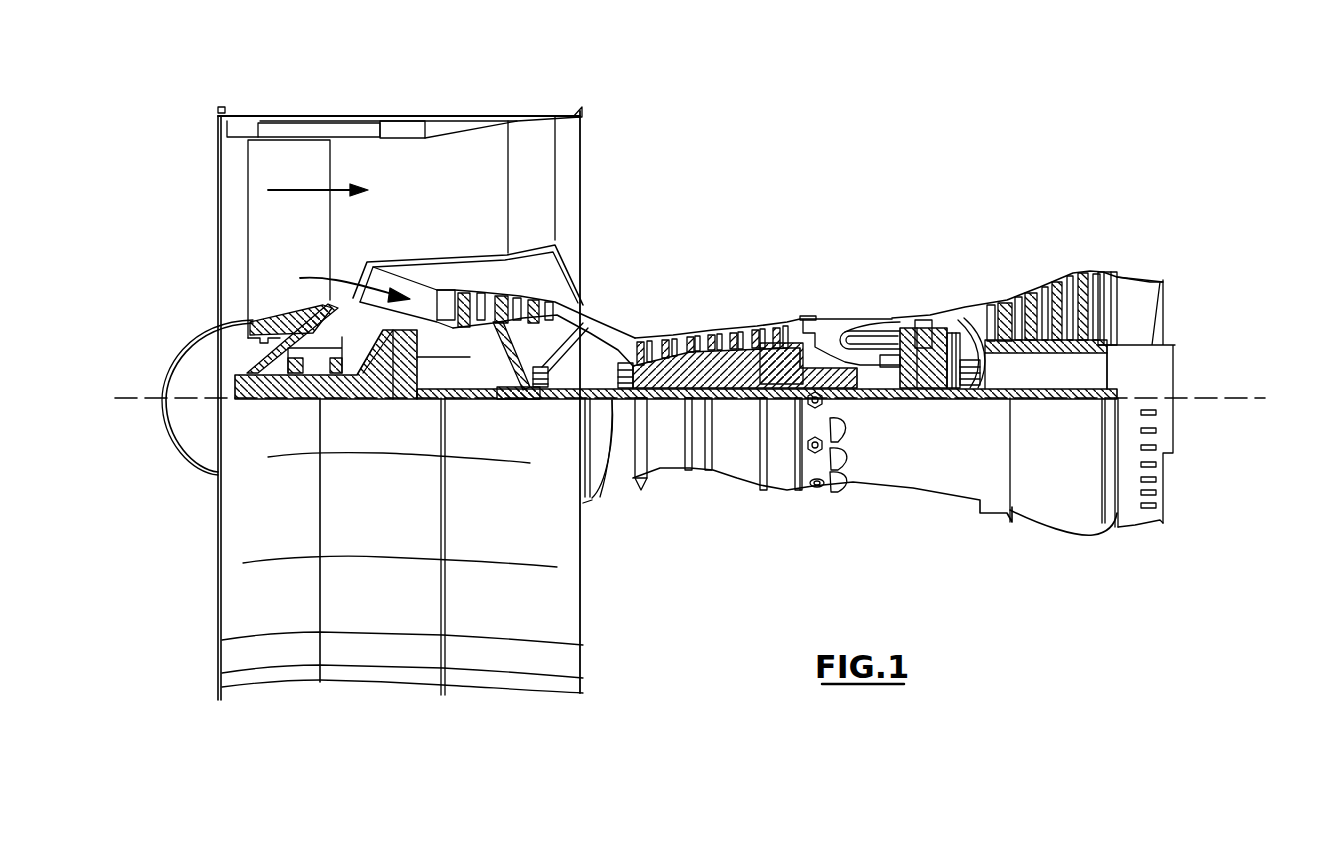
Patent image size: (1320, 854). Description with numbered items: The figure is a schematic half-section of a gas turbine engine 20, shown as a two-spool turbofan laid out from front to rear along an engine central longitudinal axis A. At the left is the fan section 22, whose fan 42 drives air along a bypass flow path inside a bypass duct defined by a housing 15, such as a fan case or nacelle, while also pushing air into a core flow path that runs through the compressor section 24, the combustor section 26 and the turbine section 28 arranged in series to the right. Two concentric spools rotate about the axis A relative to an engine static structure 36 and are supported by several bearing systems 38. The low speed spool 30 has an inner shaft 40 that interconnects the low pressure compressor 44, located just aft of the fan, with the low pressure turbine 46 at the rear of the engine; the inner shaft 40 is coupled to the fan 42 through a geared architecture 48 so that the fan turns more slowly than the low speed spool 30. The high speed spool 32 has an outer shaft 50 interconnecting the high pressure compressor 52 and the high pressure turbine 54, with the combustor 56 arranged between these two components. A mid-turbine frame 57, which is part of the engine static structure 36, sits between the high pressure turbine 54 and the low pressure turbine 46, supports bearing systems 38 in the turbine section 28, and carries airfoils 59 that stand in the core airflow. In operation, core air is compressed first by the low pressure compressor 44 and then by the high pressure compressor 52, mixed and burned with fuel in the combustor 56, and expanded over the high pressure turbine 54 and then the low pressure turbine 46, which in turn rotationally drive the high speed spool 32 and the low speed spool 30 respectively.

The housing 15 is at (400, 119).
The gas turbine engine 20 is at (701, 369).
The fan section 22 is at (372, 369).
The compressor section 24 is at (755, 320).
The combustor section 26 is at (893, 311).
The turbine section 28 is at (1033, 365).
The low speed spool 30 is at (740, 400).
The high speed spool 32 is at (785, 331).
The engine static structure 36 is at (782, 486).
The bearing systems 38 is at (539, 395).
The inner shaft 40 is at (610, 483).
The fan 42 is at (304, 245).
The low pressure compressor 44 is at (522, 300).
The low pressure turbine 46 is at (1050, 284).
The geared architecture 48 is at (405, 390).
The outer shaft 50 is at (868, 390).
The high pressure compressor 52 is at (718, 319).
The high pressure turbine 54 is at (923, 319).
The combustor 56 is at (859, 340).
The mid-turbine frame 57 is at (961, 315).
The airfoils 59 is at (986, 347).
The engine central longitudinal axis A is at (1256, 398).